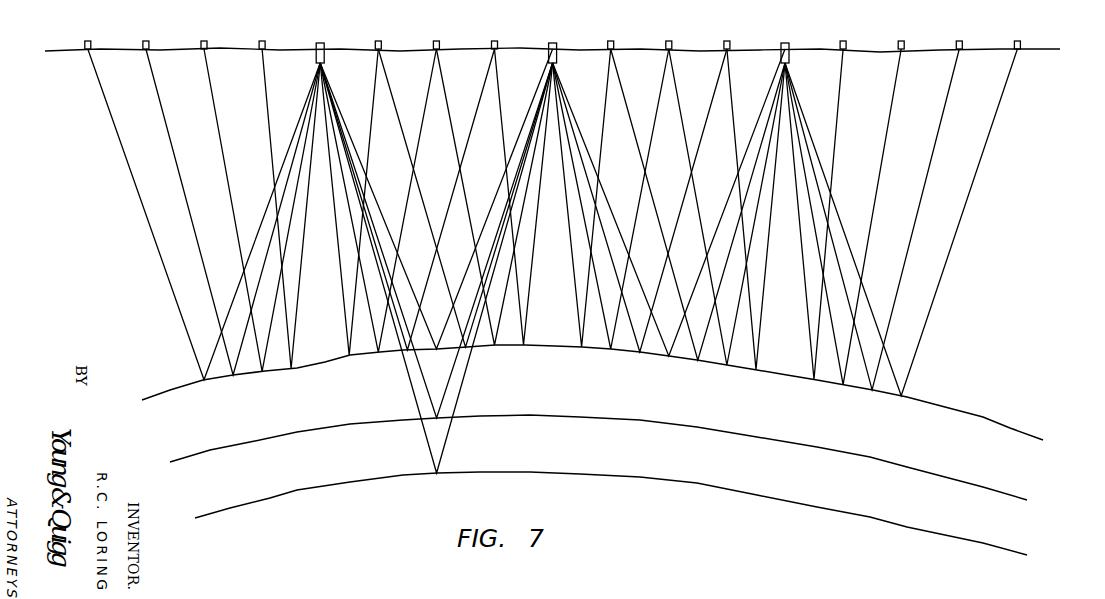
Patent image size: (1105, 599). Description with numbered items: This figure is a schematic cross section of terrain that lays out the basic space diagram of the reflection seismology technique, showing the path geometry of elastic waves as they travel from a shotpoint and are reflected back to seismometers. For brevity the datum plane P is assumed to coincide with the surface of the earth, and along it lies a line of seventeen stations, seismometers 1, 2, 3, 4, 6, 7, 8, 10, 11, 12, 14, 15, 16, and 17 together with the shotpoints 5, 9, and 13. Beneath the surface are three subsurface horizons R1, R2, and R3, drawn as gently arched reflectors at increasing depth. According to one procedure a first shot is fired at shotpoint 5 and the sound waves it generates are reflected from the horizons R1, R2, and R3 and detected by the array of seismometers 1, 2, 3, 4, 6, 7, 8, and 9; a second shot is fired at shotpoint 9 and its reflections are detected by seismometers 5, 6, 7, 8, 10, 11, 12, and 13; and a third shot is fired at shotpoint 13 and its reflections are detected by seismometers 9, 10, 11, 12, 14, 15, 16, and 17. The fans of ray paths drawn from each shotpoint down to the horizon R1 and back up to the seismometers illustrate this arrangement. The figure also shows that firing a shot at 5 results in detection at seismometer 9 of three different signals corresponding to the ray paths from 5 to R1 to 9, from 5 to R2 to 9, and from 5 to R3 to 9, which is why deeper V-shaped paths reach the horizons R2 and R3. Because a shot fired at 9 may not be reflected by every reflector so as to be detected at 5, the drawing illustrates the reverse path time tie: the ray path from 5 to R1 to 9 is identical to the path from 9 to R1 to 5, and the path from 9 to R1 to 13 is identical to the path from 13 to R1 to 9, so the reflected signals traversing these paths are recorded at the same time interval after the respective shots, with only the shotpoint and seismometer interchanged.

The seismometer 1 is at (88, 36).
The seismometer 2 is at (146, 36).
The seismometer 3 is at (204, 36).
The seismometer 4 is at (262, 36).
The shotpoint 5 is at (320, 43).
The seismometer 6 is at (378, 36).
The seismometer 7 is at (436, 36).
The seismometer 8 is at (494, 36).
The shotpoint 9 is at (552, 43).
The seismometer 10 is at (610, 36).
The seismometer 11 is at (669, 36).
The seismometer 12 is at (727, 36).
The shotpoint 13 is at (785, 43).
The seismometer 14 is at (843, 36).
The seismometer 15 is at (901, 36).
The seismometer 16 is at (959, 36).
The seismometer 17 is at (1017, 36).
The datum plane P is at (1058, 49).
The subsurface horizon R1 is at (983, 418).
The subsurface horizon R2 is at (1020, 498).
The subsurface horizon R3 is at (1027, 555).